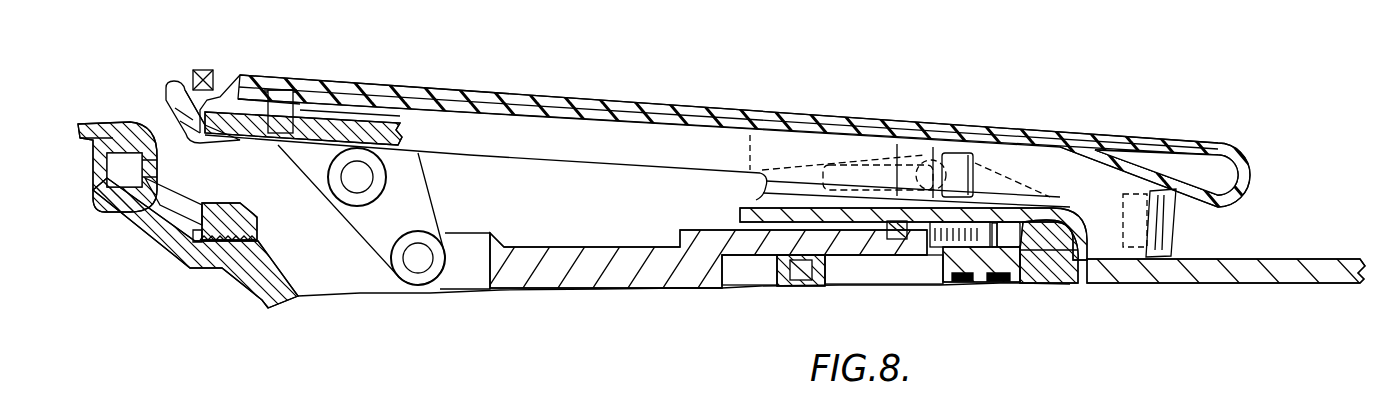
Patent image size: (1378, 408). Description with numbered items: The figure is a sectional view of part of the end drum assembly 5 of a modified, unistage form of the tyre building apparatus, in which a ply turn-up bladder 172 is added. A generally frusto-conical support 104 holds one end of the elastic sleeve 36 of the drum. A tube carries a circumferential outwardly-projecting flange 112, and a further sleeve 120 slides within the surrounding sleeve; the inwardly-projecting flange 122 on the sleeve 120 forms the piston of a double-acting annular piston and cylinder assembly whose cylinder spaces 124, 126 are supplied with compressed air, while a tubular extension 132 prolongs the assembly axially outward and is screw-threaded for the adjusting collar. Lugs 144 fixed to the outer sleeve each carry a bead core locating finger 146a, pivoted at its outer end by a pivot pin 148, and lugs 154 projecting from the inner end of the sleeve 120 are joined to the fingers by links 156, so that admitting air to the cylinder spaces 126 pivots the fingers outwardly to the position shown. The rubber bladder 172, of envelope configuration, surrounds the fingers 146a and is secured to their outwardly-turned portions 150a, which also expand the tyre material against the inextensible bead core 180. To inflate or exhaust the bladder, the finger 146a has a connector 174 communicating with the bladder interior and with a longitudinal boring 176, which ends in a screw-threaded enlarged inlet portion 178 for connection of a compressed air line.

The end drum assembly 5 is at (761, 74).
The elastic sleeve 36 is at (118, 123).
The frusto-conical support 104 is at (262, 292).
The outwardly-projecting flange 112 is at (791, 287).
The further sleeve 120 is at (657, 256).
The inwardly-projecting flange 122 is at (956, 282).
The cylinder space 124 is at (871, 273).
The cylinder space 126 is at (1045, 266).
The tubular extension 132 is at (1303, 261).
The lug 144 is at (757, 204).
The finger 146a is at (541, 124).
The pivot pin 148 is at (934, 145).
The outwardly-turned portion 150a is at (166, 100).
The lug 154 is at (468, 242).
The link 156 is at (410, 217).
The ply turn-up bladder 172 is at (385, 90).
The connector 174 is at (285, 94).
The longitudinal boring 176 is at (400, 126).
The inlet portion 178 is at (1174, 231).
The bead core 180 is at (211, 69).